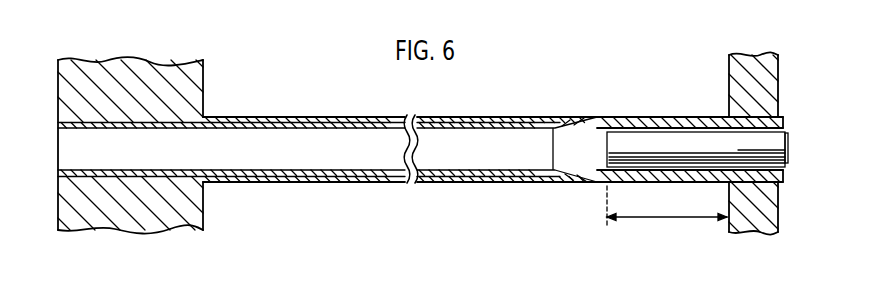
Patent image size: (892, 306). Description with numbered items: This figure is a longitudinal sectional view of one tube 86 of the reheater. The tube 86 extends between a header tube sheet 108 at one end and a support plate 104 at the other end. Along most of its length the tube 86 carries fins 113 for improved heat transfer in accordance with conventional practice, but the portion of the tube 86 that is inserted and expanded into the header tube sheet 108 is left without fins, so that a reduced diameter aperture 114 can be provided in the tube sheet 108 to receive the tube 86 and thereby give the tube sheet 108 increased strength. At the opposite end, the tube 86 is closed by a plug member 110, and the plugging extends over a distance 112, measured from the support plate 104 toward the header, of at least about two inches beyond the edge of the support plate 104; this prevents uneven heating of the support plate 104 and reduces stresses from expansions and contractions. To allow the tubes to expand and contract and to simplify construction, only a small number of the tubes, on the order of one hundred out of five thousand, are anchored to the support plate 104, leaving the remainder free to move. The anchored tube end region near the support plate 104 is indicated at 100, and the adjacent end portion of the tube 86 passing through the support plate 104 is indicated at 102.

The tube end / connector assembly 100 is at (782, 178).
The outer tube end portion 102 is at (750, 129).
The support plate 104 is at (753, 62).
The header tube sheet 108 is at (140, 62).
The plug member 110 is at (639, 140).
The plugged distance 112 is at (678, 218).
The fins 113 is at (242, 116).
The reduced diameter aperture 114 is at (88, 125).
The tube 86 is at (472, 130).